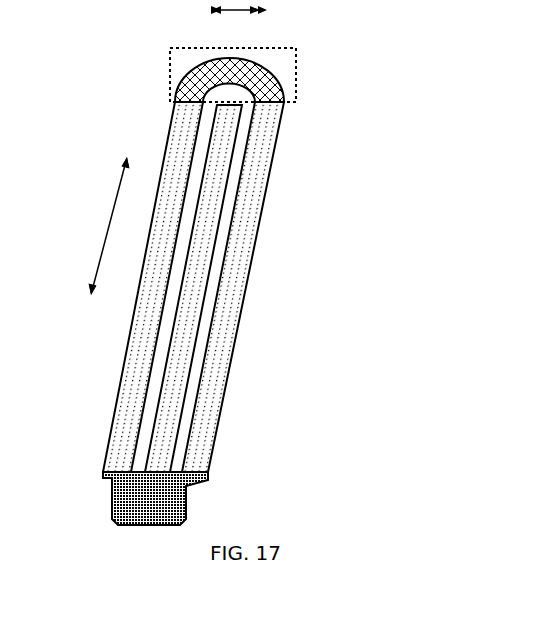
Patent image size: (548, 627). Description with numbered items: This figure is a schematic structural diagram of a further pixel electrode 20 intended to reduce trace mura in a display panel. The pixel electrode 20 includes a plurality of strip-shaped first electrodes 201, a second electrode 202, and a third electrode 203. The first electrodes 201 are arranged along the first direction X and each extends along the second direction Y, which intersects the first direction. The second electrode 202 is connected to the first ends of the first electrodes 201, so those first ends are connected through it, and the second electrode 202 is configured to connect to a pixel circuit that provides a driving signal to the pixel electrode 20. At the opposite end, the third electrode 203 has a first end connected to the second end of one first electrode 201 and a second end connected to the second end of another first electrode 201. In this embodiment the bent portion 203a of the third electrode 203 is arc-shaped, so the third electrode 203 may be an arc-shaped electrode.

The pixel electrode 20 is at (164, 31).
The first electrode 201 is at (242, 303).
The second electrode 202 is at (187, 505).
The third electrode 203 is at (378, 77).
The bent portion 203a is at (296, 61).